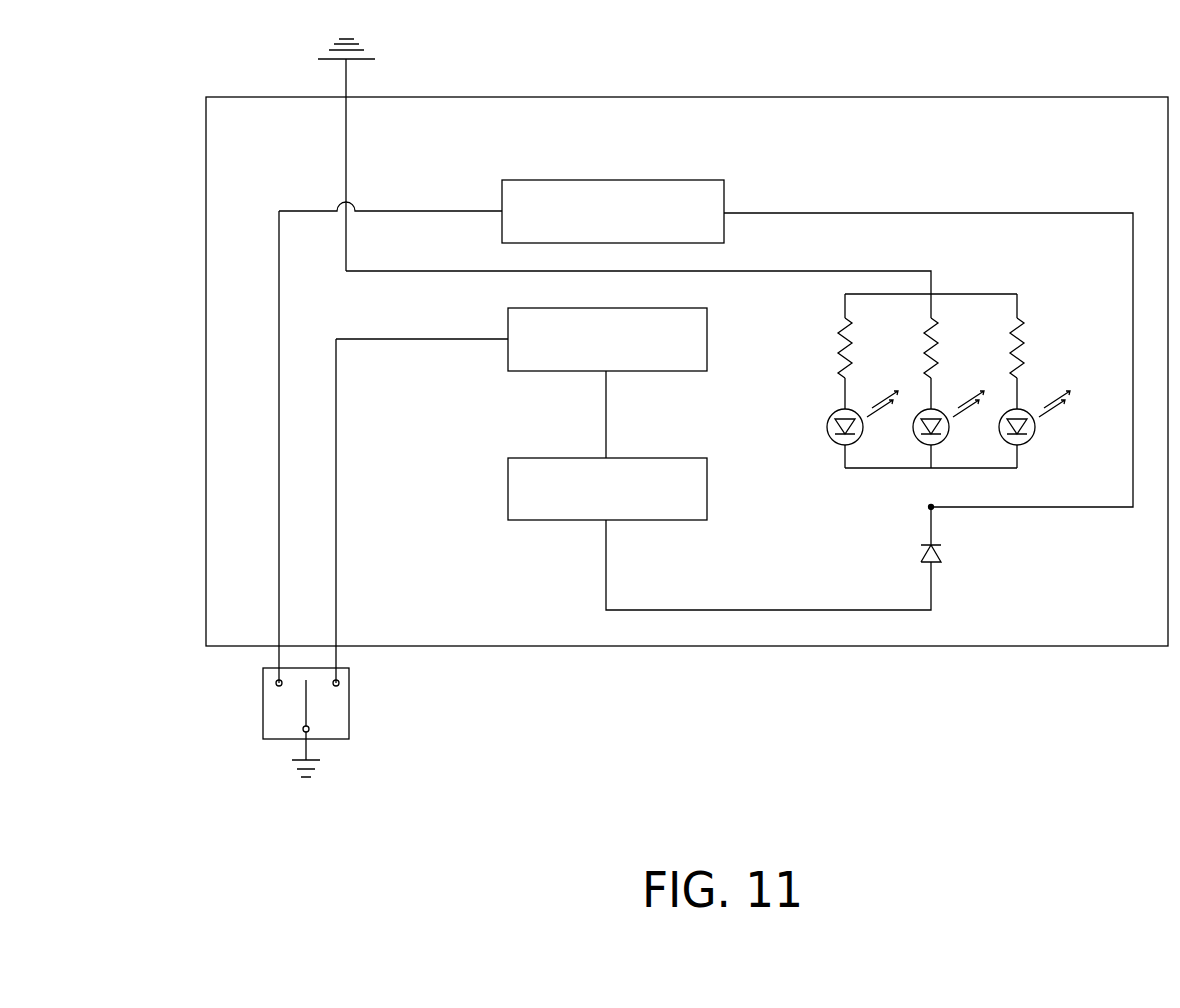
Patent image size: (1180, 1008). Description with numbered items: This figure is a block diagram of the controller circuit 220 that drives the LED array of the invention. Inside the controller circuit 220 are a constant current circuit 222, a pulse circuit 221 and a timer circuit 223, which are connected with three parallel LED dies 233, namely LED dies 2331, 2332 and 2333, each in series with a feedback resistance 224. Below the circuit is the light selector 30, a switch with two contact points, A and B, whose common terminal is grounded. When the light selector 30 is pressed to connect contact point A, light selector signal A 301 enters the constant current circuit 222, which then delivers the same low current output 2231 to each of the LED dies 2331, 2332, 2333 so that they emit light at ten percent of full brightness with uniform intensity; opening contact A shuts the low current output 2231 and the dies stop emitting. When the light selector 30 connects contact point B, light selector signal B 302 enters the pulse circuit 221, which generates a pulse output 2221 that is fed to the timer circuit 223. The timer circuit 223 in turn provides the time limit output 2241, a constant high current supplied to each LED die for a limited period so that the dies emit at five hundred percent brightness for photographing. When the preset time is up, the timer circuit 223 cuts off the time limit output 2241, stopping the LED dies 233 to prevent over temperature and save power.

The controller circuit 220 is at (822, 96).
The constant current circuit 222 is at (635, 179).
The low current output 2231 is at (897, 212).
The pulse circuit 221 is at (536, 372).
The pulse output 2221 is at (608, 408).
The timer circuit 223 is at (533, 522).
The time limit output 2241 is at (747, 608).
The feedback resistances 224 is at (840, 355).
The LED dies 233 is at (919, 445).
The LED die 2331 is at (828, 414).
The LED die 2332 is at (915, 435).
The LED die 2333 is at (1020, 410).
The light selector signal A 301 is at (277, 510).
The light selector signal B 302 is at (337, 553).
The light selector 30 is at (270, 718).